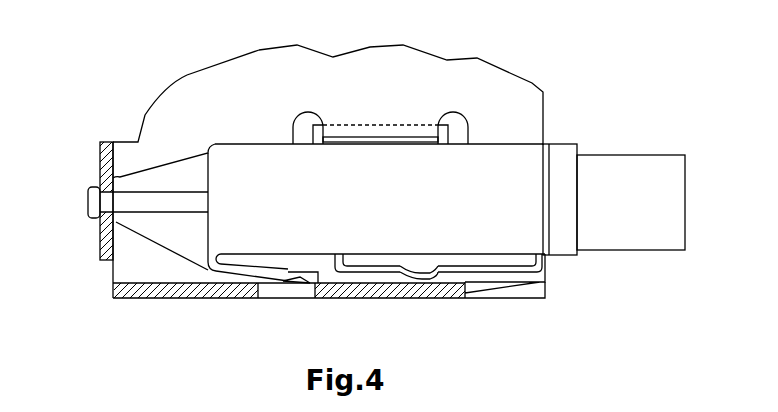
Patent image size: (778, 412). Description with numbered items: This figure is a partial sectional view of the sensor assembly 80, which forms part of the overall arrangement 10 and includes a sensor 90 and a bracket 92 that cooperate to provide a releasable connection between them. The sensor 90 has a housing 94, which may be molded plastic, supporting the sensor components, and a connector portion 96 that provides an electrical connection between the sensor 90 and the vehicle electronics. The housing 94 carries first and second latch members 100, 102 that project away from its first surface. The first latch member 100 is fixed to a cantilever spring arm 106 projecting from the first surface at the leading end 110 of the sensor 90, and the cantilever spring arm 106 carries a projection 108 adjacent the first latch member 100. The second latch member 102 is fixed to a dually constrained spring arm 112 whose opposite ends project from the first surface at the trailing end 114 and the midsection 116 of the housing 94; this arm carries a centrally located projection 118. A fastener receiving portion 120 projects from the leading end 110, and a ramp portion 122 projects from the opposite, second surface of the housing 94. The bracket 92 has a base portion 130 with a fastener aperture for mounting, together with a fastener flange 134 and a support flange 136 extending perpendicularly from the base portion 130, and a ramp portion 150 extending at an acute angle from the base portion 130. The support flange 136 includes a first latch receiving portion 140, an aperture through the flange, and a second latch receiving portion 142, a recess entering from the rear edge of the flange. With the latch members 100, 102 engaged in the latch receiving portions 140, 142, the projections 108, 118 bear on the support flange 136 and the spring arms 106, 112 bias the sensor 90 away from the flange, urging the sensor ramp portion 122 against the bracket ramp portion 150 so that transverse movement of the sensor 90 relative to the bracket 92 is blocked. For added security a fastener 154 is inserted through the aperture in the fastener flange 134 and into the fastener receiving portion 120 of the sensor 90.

The connector assembly 10 is at (153, 358).
The sensor assembly 80 is at (123, 337).
The sensor 90 is at (520, 100).
The bracket 92 is at (170, 125).
The housing 94 is at (412, 175).
The connector portion 96 is at (617, 185).
The first latch member 100 is at (318, 297).
The second latch member 102 is at (478, 286).
The cantilever spring arm 106 is at (252, 273).
The projection 108 is at (290, 284).
The leading end 110 is at (240, 182).
The dually constrained spring arm 112 is at (375, 278).
The trailing end 114 is at (528, 183).
The midsection 116 is at (387, 165).
The centrally located projection 118 is at (440, 284).
The fastener receiving portion 120 is at (143, 203).
The ramp portion 122 is at (321, 130).
The base portion 130 is at (252, 90).
The fastener flange 134 is at (100, 167).
The support flange 136 is at (350, 290).
The first latch receiving portion 140 is at (270, 292).
The second latch receiving portion 142 is at (528, 297).
The ramp portion 150 is at (358, 133).
The fastener 154 is at (88, 200).